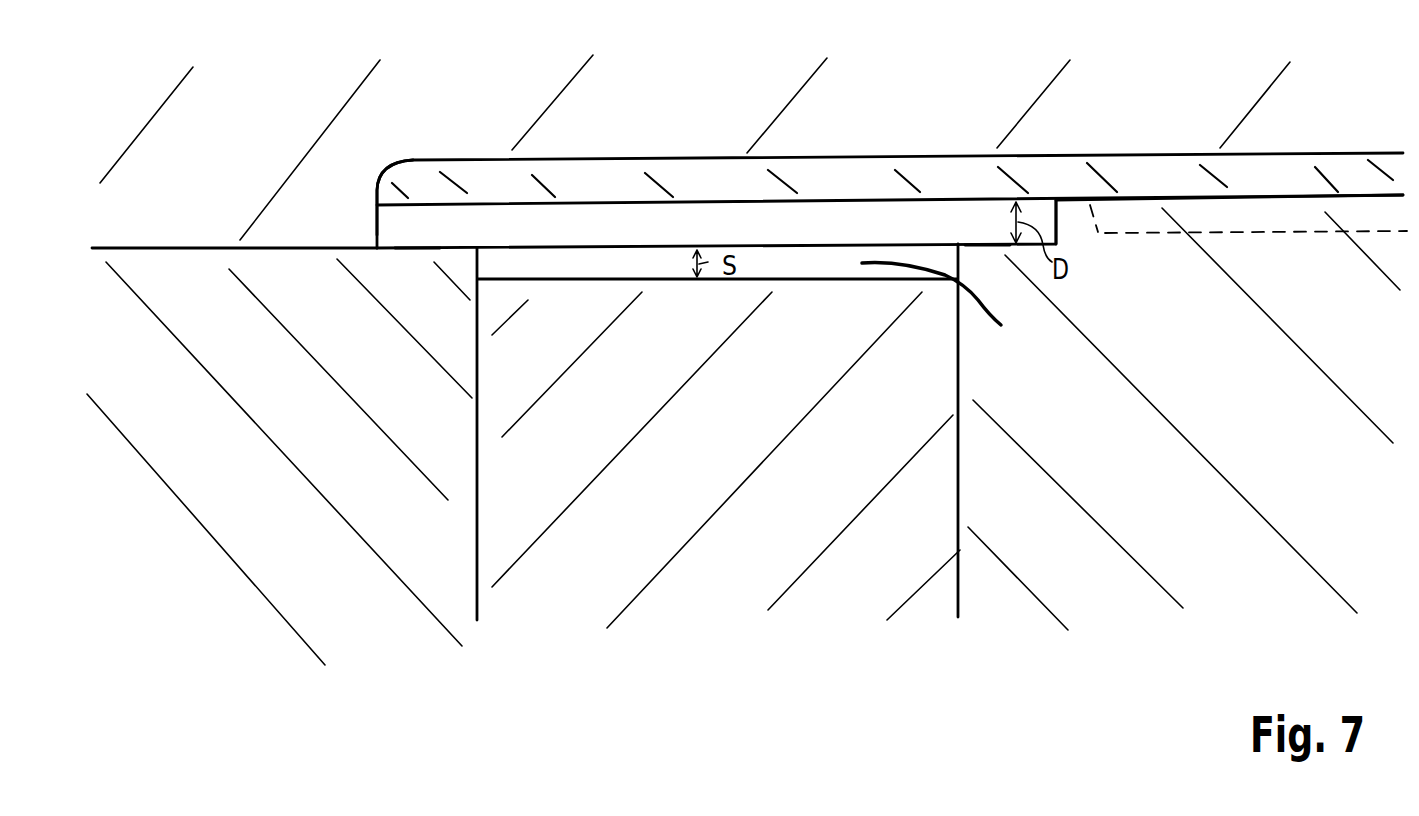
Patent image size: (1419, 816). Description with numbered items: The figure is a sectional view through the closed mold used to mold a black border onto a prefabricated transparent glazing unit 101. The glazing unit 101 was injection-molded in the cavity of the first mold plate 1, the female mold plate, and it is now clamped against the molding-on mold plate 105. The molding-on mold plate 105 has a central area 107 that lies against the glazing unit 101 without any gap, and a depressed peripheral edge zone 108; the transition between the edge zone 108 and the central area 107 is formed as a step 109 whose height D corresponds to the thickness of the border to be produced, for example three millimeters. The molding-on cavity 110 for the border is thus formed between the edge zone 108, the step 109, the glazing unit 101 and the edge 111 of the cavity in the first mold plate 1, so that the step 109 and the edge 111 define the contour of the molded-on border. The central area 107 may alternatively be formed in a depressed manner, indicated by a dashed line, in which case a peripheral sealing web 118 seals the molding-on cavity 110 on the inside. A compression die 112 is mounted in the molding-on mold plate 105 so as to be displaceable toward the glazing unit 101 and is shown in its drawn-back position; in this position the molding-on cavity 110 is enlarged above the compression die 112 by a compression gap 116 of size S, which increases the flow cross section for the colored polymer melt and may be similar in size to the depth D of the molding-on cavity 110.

The first mold plate 1 is at (751, 151).
The transparent glazing unit 101 is at (847, 166).
The molding-on mold plate 105 is at (372, 365).
The central area 107 is at (1220, 198).
The depressed peripheral edge zone 108 is at (416, 250).
The step 109 is at (1058, 220).
The molding-on cavity 110 is at (890, 221).
The edge 111 is at (377, 230).
The compression die 112 is at (780, 392).
The compression gap 116 is at (958, 308).
The peripheral sealing web 118 is at (1075, 200).